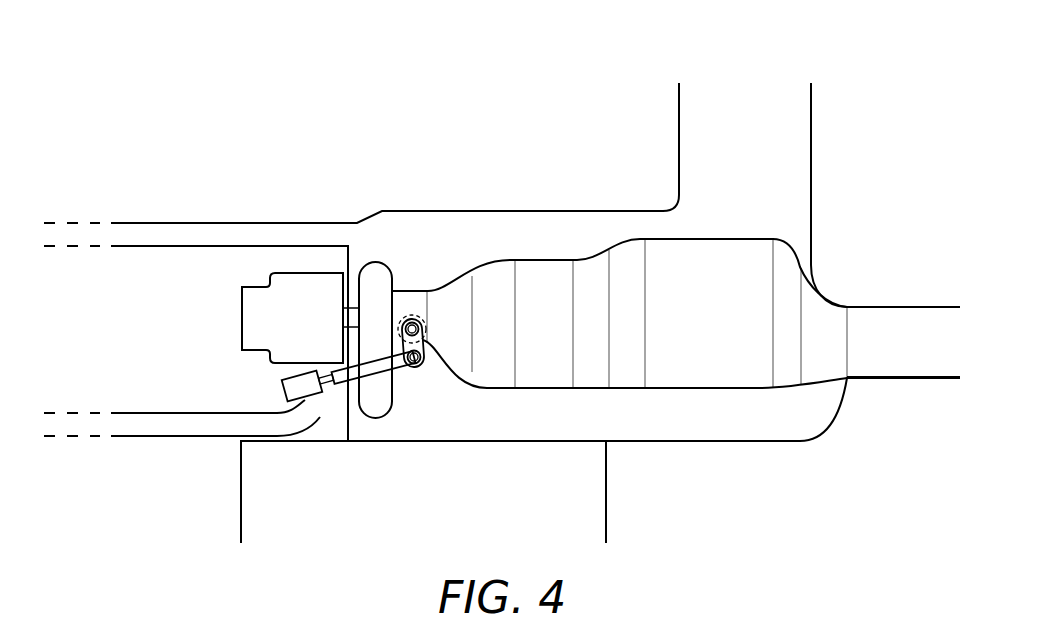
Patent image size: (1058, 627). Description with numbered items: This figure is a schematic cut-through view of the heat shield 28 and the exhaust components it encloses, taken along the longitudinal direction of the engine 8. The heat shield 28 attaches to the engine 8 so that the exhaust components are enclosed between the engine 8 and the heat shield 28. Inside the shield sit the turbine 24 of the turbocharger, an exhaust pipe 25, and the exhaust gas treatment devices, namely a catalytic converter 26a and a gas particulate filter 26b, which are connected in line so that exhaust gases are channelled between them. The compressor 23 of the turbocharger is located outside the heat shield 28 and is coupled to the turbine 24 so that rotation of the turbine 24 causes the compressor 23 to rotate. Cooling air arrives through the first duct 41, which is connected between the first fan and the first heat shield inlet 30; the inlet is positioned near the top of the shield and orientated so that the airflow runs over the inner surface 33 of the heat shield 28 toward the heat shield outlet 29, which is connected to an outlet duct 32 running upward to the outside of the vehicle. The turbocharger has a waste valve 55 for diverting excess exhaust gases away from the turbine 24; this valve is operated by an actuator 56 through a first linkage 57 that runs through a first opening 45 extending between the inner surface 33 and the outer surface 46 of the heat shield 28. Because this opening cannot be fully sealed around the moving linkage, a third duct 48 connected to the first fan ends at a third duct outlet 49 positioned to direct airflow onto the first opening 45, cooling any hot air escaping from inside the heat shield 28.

The engine 8 is at (595, 494).
The compressor 23 is at (250, 316).
The turbine 24 is at (386, 262).
The exhaust pipe 25 is at (920, 365).
The catalytic converter 26a is at (538, 375).
The gas particulate filter 26b is at (748, 375).
The heat shield 28 is at (530, 210).
The heat shield outlet 29 is at (790, 209).
The first heat shield inlet 30 is at (350, 230).
The outlet duct 32 is at (742, 88).
The inner surface 33 is at (475, 214).
The first duct 41 is at (153, 230).
The first opening 45 is at (333, 398).
The outer surface 46 is at (605, 204).
The third duct 48 is at (155, 427).
The third duct outlet 49 is at (318, 415).
The waste valve 55 is at (413, 310).
The actuator 56 is at (283, 385).
The first linkage 57 is at (382, 375).